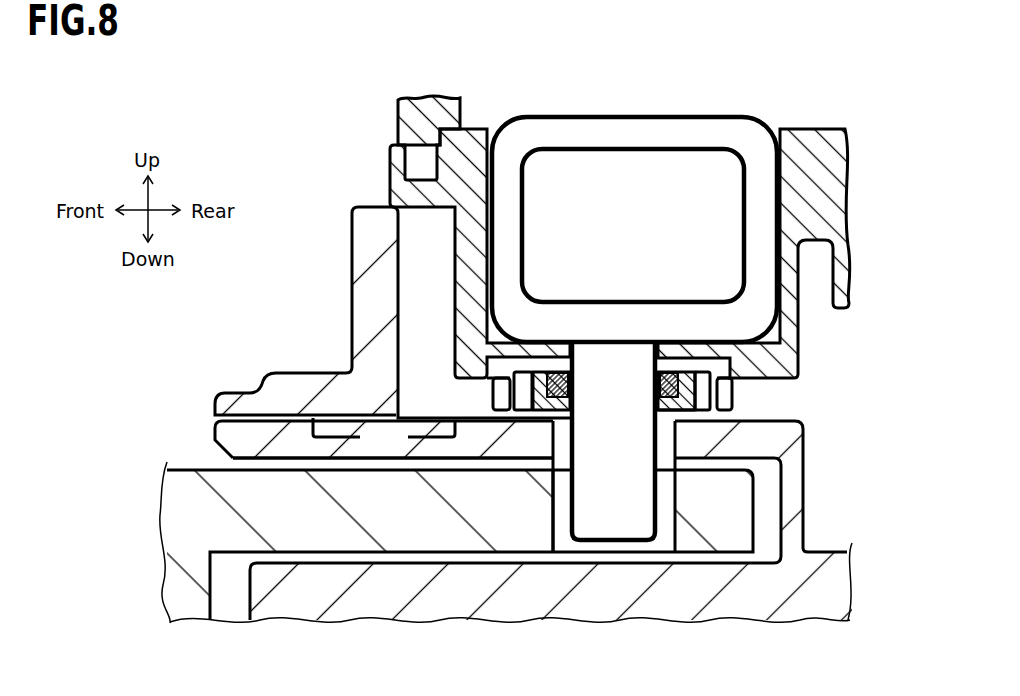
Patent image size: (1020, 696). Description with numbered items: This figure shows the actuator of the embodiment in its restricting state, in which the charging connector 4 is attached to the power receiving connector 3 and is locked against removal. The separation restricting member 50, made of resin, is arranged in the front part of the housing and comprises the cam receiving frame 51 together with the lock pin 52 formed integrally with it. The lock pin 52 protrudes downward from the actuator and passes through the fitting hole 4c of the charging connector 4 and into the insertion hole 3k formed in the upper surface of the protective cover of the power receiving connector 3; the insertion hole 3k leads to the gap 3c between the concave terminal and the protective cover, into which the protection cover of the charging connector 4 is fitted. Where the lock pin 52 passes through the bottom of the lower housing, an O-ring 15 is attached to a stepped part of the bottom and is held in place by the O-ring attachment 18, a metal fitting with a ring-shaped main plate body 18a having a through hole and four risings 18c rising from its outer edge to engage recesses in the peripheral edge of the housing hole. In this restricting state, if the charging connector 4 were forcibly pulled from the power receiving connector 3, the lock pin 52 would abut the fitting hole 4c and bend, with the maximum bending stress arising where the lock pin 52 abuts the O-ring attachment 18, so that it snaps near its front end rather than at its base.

The power receiving connector 3 is at (262, 383).
The gap 3c is at (211, 458).
The insertion hole 3k is at (556, 432).
The charging connector 4 is at (190, 522).
The fitting hole 4c is at (552, 505).
The O-ring 15 is at (550, 381).
The O-ring attachment 18 is at (717, 393).
The main plate body 18a is at (692, 412).
The risings 18c is at (545, 396).
The separation restricting member 50 is at (588, 105).
The cam receiving frame 51 is at (672, 117).
The lock pin 52 is at (608, 487).